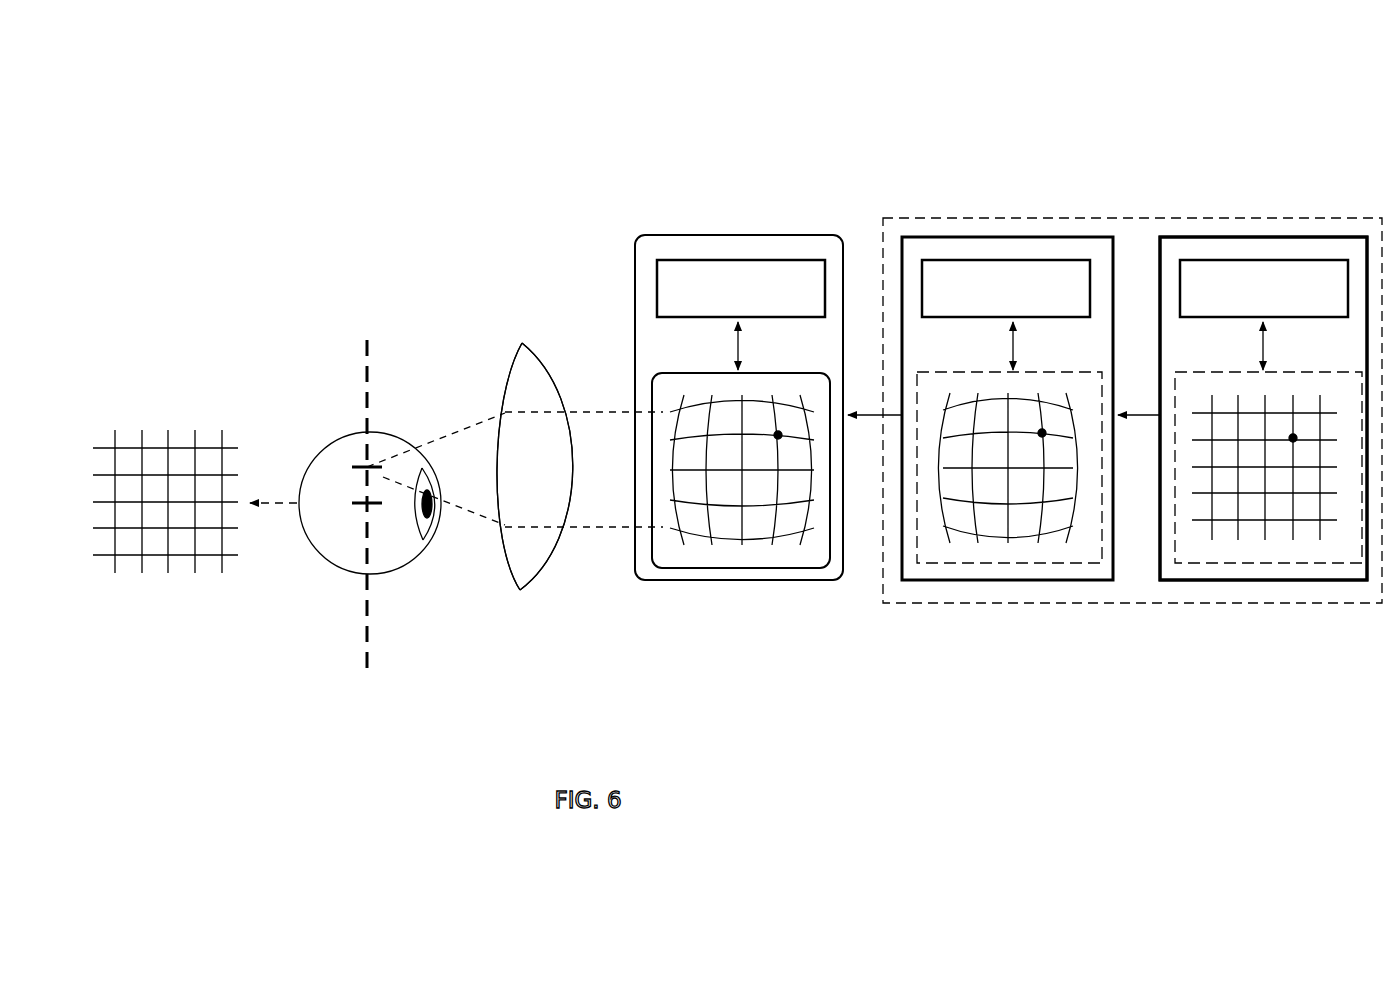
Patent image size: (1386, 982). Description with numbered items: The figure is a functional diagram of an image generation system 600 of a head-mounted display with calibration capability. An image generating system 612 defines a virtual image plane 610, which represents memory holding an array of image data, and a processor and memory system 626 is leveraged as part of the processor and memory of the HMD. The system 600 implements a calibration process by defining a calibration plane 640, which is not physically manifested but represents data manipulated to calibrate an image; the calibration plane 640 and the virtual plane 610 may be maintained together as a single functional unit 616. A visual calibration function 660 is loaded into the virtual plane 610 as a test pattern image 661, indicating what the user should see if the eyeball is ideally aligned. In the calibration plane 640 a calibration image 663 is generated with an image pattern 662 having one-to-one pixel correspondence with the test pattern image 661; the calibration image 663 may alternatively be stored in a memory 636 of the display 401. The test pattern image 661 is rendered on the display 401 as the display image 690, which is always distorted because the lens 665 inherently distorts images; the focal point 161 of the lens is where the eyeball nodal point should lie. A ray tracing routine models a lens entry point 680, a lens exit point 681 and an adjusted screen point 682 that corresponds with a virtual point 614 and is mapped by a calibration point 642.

The image generation system 600 is at (473, 157).
The display image 690 is at (168, 582).
The focal point 161 is at (366, 465).
The image pattern 662 is at (367, 340).
The lens 665 is at (513, 584).
The lens exit point 681 is at (497, 408).
The lens entry point 680 is at (568, 400).
The display 401 is at (736, 235).
The processor and memory system 626 is at (687, 279).
The memory 636 is at (652, 372).
The adjusted screen point 682 is at (778, 435).
The single functional unit 616 is at (902, 606).
The calibration plane 640 is at (1006, 237).
The calibration image 663 is at (910, 370).
The calibration point 642 is at (1042, 433).
The virtual image plane 610 is at (1262, 237).
The visual calibration function 660 is at (1170, 367).
The test pattern image 661 is at (1267, 550).
The virtual point 614 is at (1293, 438).
The image generating system 612 is at (1173, 584).